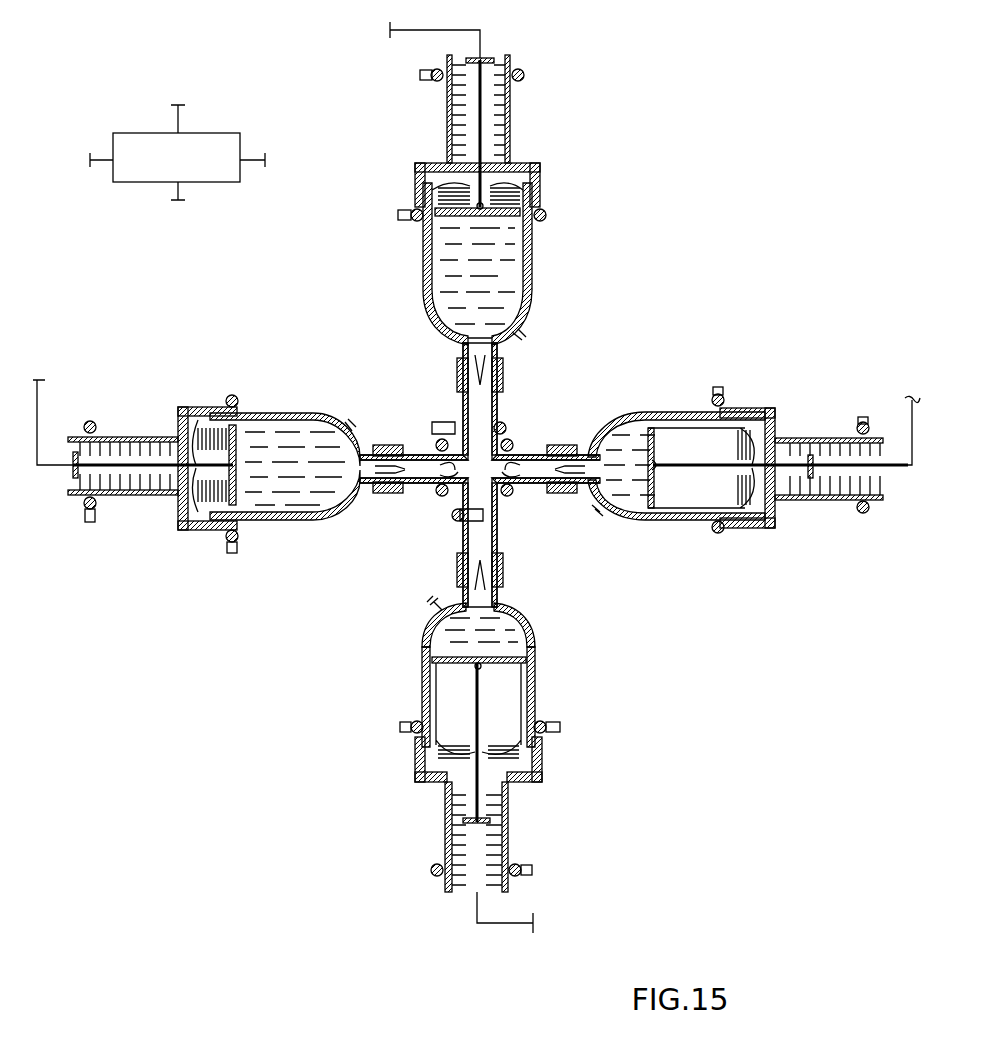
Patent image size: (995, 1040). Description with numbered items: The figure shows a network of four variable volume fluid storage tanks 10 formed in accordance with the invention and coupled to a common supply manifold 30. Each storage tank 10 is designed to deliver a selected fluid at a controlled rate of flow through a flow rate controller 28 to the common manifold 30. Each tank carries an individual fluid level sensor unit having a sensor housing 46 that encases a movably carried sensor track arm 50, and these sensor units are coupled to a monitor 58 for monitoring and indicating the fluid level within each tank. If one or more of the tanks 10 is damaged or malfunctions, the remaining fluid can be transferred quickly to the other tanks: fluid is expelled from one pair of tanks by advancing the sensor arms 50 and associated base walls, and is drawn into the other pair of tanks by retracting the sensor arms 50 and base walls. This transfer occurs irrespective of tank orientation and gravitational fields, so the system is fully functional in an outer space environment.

The fluid storage tank 10 is at (476, 501).
The flow rate controller 28 is at (522, 383).
The common supply manifold 30 is at (460, 496).
The sensor housing 46 is at (508, 842).
The sensor track arm 50 is at (680, 467).
The monitor 58 is at (217, 133).